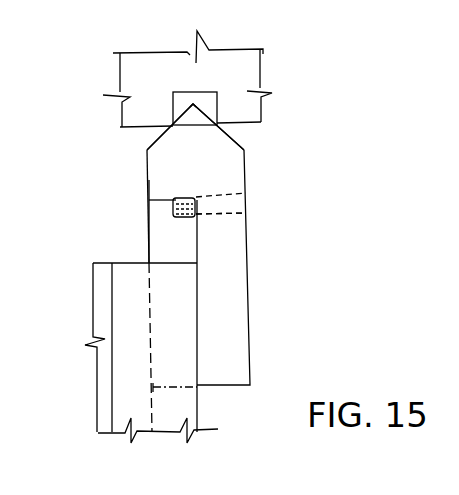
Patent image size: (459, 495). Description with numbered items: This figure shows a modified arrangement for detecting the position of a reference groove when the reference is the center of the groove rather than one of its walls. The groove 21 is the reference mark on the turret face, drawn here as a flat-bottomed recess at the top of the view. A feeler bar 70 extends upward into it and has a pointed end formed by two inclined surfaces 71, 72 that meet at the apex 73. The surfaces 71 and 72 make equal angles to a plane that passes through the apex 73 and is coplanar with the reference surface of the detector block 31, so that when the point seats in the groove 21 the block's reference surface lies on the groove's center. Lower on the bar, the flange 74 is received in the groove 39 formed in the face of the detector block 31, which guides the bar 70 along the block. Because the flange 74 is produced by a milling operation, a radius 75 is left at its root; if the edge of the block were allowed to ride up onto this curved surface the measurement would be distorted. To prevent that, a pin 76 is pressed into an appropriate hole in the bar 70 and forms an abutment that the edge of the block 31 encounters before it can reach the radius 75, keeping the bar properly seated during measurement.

The groove 21 is at (217, 95).
The detector block 31 is at (93, 288).
The groove 39 is at (178, 406).
The feeler bar 70 is at (250, 278).
The surface 71 is at (160, 137).
The surface 72 is at (230, 132).
The apex 73 is at (194, 108).
The flange 74 is at (149, 223).
The radius 75 is at (186, 200).
The pin 76 is at (190, 217).